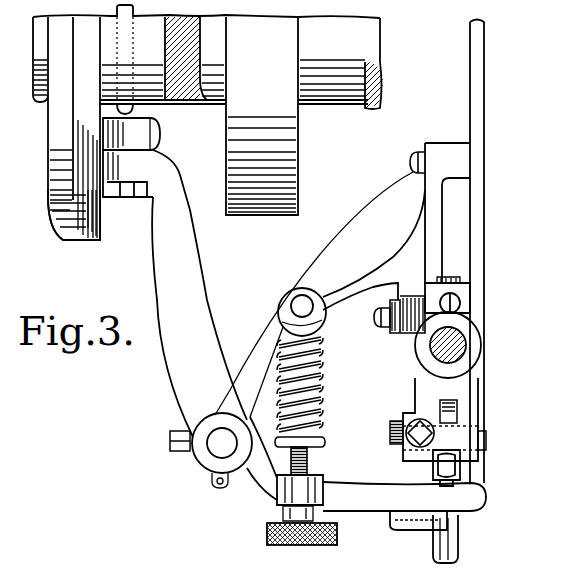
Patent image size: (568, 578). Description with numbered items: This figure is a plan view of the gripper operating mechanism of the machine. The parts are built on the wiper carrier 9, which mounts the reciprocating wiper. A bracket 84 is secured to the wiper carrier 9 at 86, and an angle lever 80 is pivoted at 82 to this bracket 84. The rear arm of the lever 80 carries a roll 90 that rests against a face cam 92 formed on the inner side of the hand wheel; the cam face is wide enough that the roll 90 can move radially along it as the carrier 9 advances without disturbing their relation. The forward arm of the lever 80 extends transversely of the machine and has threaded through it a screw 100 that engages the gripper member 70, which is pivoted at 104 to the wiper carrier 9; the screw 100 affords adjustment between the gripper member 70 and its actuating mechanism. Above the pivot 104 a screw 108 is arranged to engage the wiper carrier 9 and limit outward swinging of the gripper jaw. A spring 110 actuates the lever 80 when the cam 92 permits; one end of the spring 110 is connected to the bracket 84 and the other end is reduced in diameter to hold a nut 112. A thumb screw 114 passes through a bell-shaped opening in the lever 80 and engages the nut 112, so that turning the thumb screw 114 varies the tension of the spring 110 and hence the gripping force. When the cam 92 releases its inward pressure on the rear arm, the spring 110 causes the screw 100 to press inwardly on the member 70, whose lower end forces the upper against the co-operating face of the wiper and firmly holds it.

The wiper carrier 9 is at (475, 222).
The gripper member 70 is at (448, 438).
The angle lever 80 is at (193, 353).
The pivot 82 is at (218, 446).
The bracket 84 is at (260, 353).
The securing point 86 is at (410, 160).
The roll 90 is at (133, 142).
The face cam 92 is at (97, 212).
The screw 100 is at (452, 547).
The pivot 104 is at (483, 445).
The screw 108 is at (460, 411).
The spring 110 is at (323, 395).
The nut 112 is at (317, 440).
The thumb screw 114 is at (307, 460).